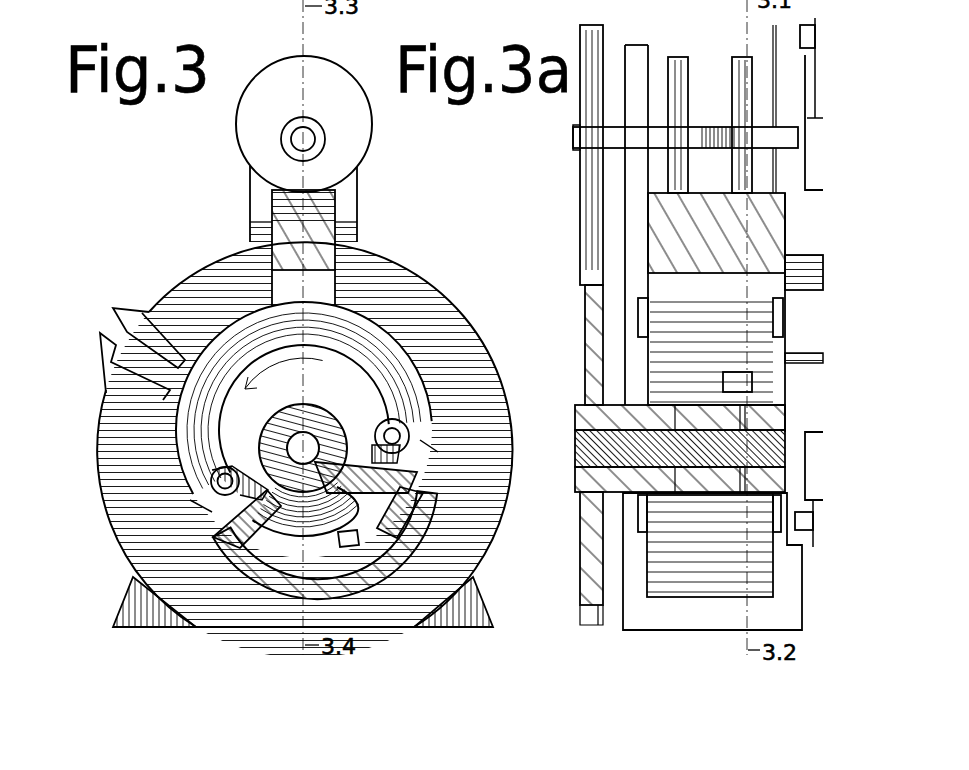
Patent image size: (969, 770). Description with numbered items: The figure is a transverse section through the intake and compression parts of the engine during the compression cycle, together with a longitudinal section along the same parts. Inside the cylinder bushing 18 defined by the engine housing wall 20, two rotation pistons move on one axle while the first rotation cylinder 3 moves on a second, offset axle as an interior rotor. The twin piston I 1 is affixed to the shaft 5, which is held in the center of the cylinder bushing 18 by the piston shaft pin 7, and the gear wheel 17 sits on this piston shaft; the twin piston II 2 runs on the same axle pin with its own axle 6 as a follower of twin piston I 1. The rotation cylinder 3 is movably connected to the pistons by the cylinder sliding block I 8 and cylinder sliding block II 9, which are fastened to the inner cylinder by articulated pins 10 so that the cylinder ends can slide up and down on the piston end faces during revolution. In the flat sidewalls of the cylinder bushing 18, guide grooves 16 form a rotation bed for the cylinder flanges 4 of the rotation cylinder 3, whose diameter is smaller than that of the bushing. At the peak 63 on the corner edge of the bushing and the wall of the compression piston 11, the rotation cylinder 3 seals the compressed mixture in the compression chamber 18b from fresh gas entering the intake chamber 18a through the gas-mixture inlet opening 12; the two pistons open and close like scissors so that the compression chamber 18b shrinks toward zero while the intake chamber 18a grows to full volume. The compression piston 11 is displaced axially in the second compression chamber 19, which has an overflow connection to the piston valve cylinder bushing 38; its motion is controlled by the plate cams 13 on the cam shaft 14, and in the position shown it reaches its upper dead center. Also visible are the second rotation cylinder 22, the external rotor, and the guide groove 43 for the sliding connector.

In FIG. 3, the twin piston I 1 is at (330, 487).
In FIG. 3, the twin piston II 2 is at (205, 572).
In FIG. 3, the first rotation cylinder 3 is at (208, 380).
In FIG. 3, the cylinder flange 4 is at (340, 525).
In FIG. 3, the shaft of twin piston I 5 is at (285, 422).
In FIG. 3A, the shaft of twin piston I 5 is at (635, 482).
In FIG. 3A, the shaft of twin piston II 6 is at (635, 407).
In FIG. 3A, the piston shaft pin 7 is at (578, 452).
In FIG. 3, the cylinder sliding block I 8 is at (368, 466).
In FIG. 3, the cylinder sliding block II 9 is at (205, 500).
In FIG. 3, the articulated pin of cylinder sliding block 10 is at (400, 420).
In FIG. 3, the compression piston 11 is at (317, 237).
In FIG. 3A, the compression piston 11 is at (698, 233).
In FIG. 3, the gas-mixture inlet opening 12 is at (143, 330).
In FIG. 3A, the gas-mixture inlet opening 12 is at (732, 382).
In FIG. 3, the plate cam 13 is at (268, 118).
In FIG. 3A, the plate cam 13 is at (742, 108).
In FIG. 3, the cam shaft 14 is at (312, 140).
In FIG. 3A, the cam shaft 14 is at (612, 137).
In FIG. 3A, the guide groove for cylinder flange 16 is at (778, 318).
In FIG. 3A, the gear wheel of piston shaft 17 is at (598, 560).
In FIG. 3A, the cylinder bushing 18 is at (705, 560).
In FIG. 3, the intake chamber 18a is at (207, 518).
In FIG. 3, the compression chamber 18b is at (425, 445).
In FIG. 3, the second compression chamber 19 is at (315, 290).
In FIG. 3A, the second compression chamber 19 is at (722, 283).
In FIG. 3, the engine housing wall 20 is at (395, 305).
In FIG. 3A, the engine housing wall 20 is at (808, 223).
In FIG. 3A, the second rotation cylinder 22 is at (817, 160).
In FIG. 3A, the piston valve cylinder bushing 38 is at (807, 337).
In FIG. 3A, the guide groove for sliding connector 43 is at (813, 37).
In FIG. 3, the peak in cylinder bushing 63 is at (250, 310).